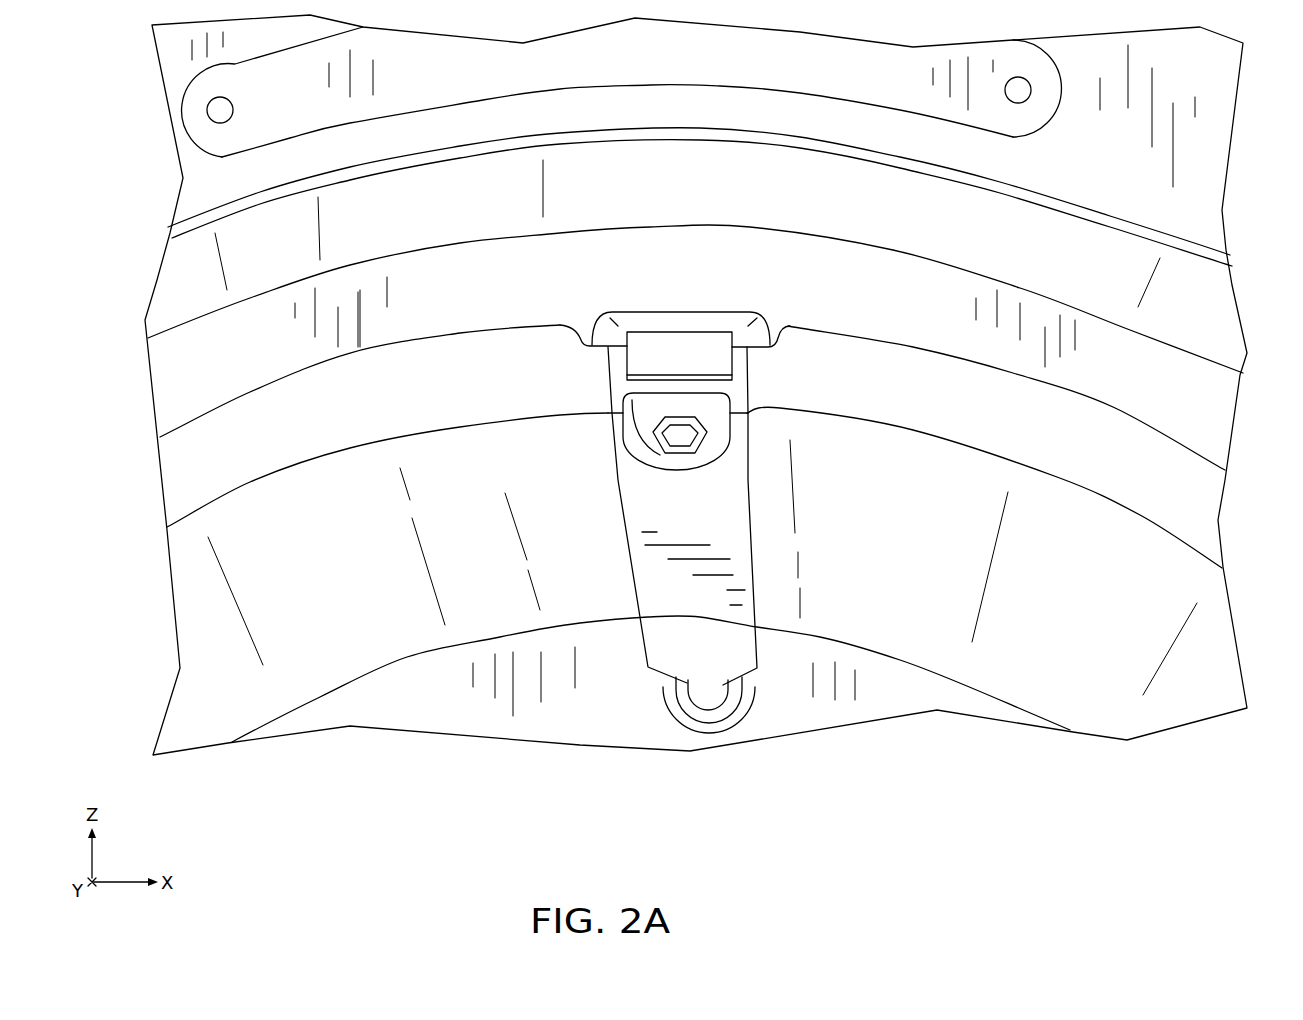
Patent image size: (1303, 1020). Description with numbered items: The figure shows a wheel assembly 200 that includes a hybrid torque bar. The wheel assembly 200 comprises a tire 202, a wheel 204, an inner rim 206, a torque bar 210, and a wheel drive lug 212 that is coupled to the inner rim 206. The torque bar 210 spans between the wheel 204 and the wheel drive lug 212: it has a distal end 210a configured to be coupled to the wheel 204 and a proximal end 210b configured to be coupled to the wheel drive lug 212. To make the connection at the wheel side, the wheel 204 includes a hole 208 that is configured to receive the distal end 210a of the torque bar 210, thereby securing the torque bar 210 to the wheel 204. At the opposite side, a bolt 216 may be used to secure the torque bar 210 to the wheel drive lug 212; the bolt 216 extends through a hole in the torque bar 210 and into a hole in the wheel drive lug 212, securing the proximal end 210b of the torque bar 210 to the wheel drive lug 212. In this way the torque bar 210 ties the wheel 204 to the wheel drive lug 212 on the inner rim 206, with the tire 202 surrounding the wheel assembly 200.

The wheel assembly 200 is at (100, 163).
The tire 202 is at (1197, 90).
The wheel 204 is at (173, 376).
The inner rim 206 is at (185, 478).
The hole 208 is at (690, 700).
The torque bar 210 is at (737, 652).
The distal end 210a is at (667, 662).
The proximal end 210b is at (618, 444).
The wheel drive lug 212 is at (665, 357).
The bolt 216 is at (688, 433).